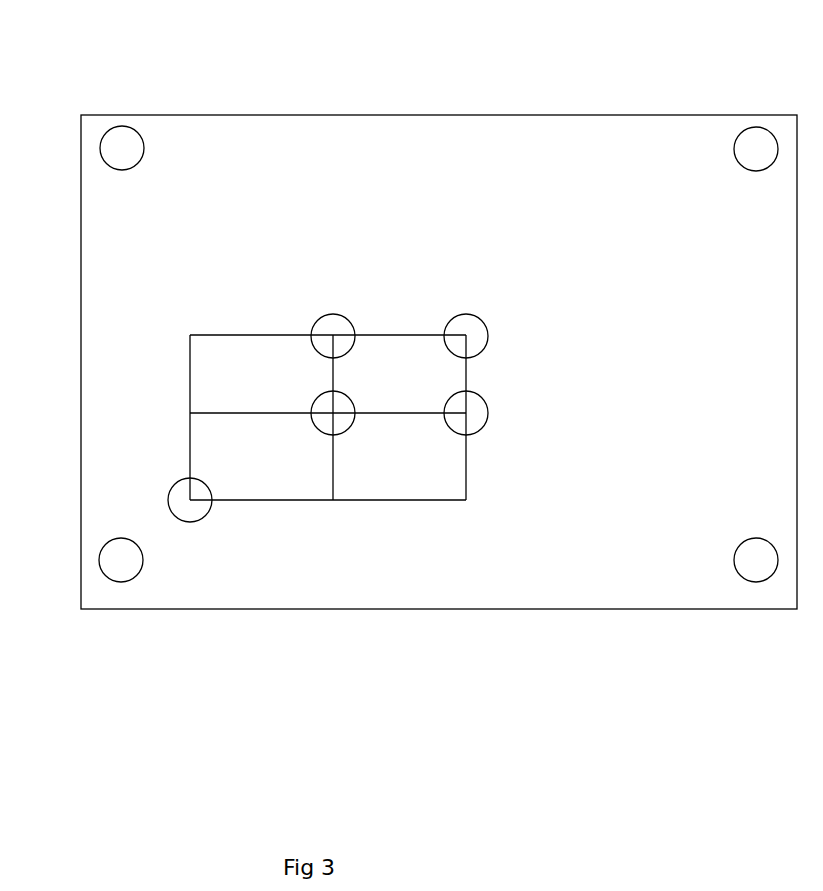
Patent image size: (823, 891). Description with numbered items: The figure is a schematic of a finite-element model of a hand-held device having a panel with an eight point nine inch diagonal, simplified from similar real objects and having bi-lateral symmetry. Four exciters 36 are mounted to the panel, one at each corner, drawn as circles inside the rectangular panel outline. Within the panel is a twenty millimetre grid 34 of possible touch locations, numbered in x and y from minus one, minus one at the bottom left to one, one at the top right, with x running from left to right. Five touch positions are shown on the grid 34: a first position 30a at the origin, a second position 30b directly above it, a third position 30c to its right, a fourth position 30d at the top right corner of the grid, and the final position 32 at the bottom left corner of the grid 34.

The grid 34 is at (232, 334).
The exciters 36 is at (117, 569).
The final touch position 32 is at (187, 522).
The first touch position 30a is at (336, 418).
The second touch position 30b is at (468, 423).
The third touch position 30c is at (342, 335).
The fourth touch position 30d is at (488, 335).